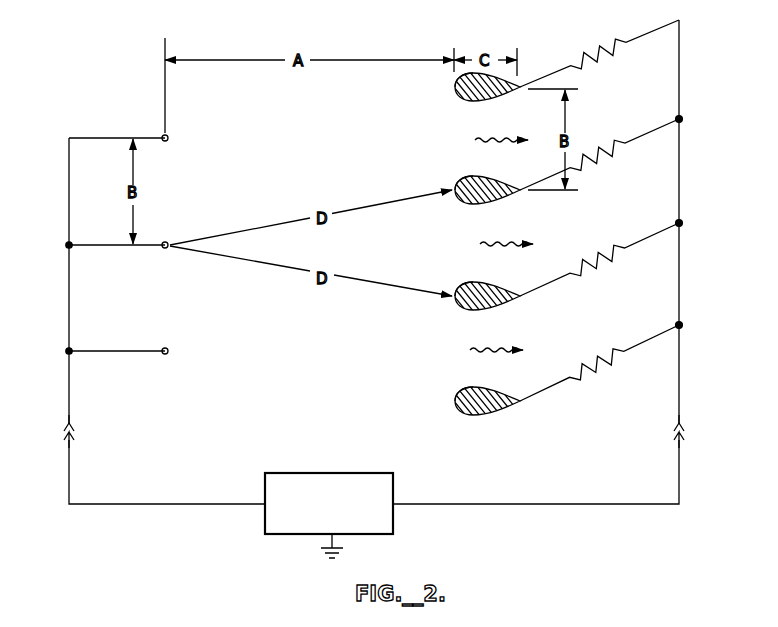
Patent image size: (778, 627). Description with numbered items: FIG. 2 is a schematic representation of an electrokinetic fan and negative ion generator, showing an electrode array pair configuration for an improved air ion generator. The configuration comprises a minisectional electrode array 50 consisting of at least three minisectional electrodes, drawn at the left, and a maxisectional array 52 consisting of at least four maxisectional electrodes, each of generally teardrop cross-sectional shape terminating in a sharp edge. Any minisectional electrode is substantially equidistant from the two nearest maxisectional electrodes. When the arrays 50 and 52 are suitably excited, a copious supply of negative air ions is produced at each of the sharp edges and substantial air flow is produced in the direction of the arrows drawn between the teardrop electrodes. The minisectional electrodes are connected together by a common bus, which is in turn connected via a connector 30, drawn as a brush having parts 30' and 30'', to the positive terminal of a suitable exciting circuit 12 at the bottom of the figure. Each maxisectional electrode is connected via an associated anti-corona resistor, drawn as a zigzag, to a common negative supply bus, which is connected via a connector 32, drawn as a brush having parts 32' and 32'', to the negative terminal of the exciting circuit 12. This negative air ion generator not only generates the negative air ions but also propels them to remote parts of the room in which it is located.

The exciting circuit 12 is at (365, 473).
The connector 30 is at (47, 436).
The brush contact 30' is at (90, 424).
The brush contact 30'' is at (92, 450).
The connector 32 is at (703, 434).
The brush contact 32' is at (700, 412).
The brush contact 32'' is at (704, 455).
The minisectional electrode array 50 is at (115, 223).
The maxisectional array 52 is at (490, 264).